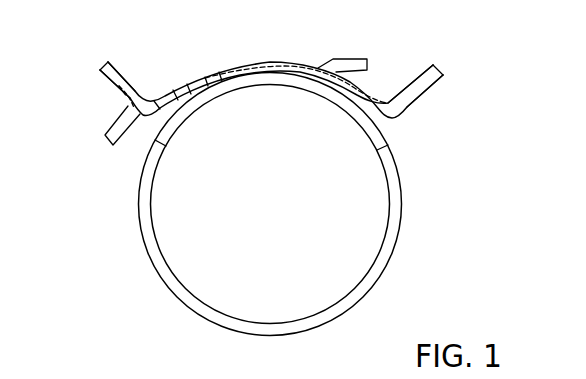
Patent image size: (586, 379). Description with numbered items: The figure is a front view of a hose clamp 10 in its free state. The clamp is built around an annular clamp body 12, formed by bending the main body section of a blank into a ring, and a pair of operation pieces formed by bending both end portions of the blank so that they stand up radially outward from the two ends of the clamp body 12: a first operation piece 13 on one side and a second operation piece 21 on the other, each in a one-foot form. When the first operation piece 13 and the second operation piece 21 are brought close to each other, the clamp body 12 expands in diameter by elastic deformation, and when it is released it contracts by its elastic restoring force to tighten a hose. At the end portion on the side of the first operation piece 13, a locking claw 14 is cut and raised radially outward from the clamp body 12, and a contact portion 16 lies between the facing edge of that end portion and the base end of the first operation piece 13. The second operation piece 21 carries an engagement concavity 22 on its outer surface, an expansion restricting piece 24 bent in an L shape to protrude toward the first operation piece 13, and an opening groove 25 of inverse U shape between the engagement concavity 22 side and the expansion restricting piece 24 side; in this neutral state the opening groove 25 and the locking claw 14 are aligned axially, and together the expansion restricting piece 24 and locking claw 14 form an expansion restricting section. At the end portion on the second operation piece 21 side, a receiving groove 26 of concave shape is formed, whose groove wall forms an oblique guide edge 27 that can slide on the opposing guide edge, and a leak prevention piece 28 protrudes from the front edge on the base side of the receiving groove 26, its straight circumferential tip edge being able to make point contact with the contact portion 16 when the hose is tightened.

The hose clamp 10 is at (267, 168).
The clamp body 12 is at (383, 258).
The first operation piece 13 is at (435, 68).
The locking claw 14 is at (346, 61).
The contact portion 16 is at (388, 103).
The second operation piece 21 is at (114, 70).
The engagement concavity 22 is at (128, 107).
The expansion restricting piece 24 is at (109, 142).
The opening groove 25 is at (127, 97).
The receiving groove 26 is at (174, 88).
The guide edge 27 is at (158, 97).
The leak prevention piece 28 is at (211, 70).